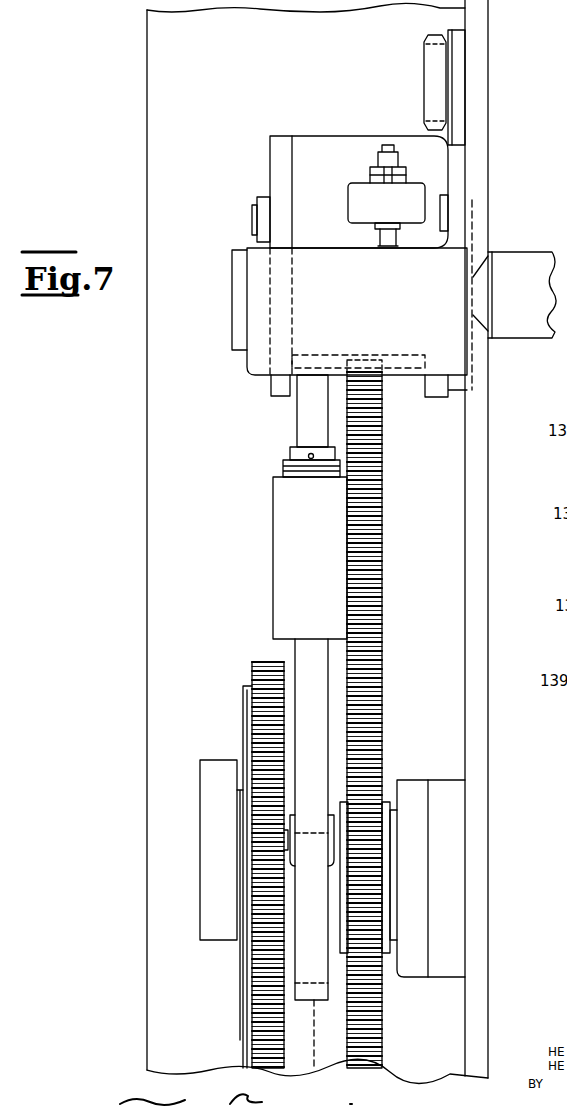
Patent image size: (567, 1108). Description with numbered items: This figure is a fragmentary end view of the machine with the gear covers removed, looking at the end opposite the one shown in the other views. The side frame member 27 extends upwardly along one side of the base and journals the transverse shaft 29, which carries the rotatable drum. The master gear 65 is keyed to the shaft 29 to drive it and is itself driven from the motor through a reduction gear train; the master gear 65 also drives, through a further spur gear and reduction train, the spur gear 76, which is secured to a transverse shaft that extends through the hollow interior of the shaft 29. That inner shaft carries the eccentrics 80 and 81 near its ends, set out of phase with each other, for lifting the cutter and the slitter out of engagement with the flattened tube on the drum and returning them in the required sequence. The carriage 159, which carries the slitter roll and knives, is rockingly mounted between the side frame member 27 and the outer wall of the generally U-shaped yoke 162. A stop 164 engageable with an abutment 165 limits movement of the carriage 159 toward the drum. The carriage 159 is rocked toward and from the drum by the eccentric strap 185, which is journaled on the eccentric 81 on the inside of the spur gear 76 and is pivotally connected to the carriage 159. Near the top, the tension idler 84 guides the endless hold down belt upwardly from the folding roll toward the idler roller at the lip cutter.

The side frame member 27 is at (482, 772).
The tension idler 84 is at (425, 88).
The carriage 159 is at (284, 167).
The abutment 165 is at (375, 231).
The stop 164 is at (405, 246).
The yoke 162 is at (260, 360).
The eccentric strap 185 is at (297, 418).
The master gear 65 is at (365, 542).
The spur gear 76 is at (265, 662).
The eccentric 81 is at (316, 1066).
The eccentric 80 is at (218, 942).
The transverse shaft 29 is at (392, 812).